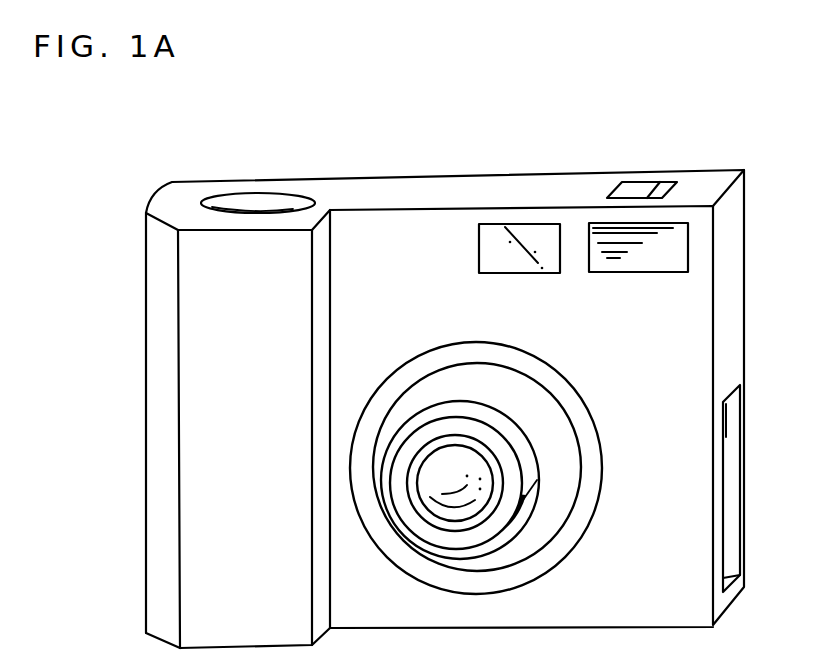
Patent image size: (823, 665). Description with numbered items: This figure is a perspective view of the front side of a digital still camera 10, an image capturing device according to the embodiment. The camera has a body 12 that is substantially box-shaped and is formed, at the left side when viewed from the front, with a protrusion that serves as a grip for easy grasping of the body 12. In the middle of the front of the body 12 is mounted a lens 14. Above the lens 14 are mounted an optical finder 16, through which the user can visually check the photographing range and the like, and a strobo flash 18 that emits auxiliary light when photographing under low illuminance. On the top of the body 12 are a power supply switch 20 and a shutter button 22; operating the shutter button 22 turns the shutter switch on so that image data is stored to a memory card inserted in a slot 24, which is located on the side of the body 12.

The digital still camera 10 is at (431, 115).
The body 12 is at (516, 193).
The lens 14 is at (440, 520).
The optical finder 16 is at (490, 256).
The strobo flash 18 is at (660, 260).
The power supply switch 20 is at (662, 190).
The shutter button 22 is at (255, 203).
The slot 24 is at (732, 508).